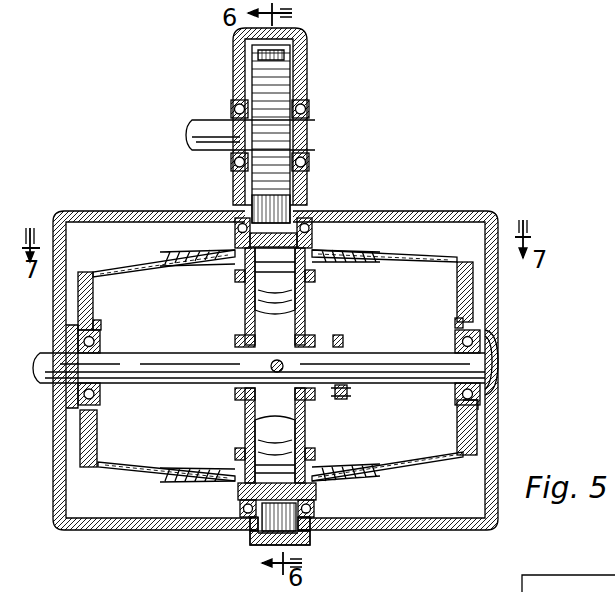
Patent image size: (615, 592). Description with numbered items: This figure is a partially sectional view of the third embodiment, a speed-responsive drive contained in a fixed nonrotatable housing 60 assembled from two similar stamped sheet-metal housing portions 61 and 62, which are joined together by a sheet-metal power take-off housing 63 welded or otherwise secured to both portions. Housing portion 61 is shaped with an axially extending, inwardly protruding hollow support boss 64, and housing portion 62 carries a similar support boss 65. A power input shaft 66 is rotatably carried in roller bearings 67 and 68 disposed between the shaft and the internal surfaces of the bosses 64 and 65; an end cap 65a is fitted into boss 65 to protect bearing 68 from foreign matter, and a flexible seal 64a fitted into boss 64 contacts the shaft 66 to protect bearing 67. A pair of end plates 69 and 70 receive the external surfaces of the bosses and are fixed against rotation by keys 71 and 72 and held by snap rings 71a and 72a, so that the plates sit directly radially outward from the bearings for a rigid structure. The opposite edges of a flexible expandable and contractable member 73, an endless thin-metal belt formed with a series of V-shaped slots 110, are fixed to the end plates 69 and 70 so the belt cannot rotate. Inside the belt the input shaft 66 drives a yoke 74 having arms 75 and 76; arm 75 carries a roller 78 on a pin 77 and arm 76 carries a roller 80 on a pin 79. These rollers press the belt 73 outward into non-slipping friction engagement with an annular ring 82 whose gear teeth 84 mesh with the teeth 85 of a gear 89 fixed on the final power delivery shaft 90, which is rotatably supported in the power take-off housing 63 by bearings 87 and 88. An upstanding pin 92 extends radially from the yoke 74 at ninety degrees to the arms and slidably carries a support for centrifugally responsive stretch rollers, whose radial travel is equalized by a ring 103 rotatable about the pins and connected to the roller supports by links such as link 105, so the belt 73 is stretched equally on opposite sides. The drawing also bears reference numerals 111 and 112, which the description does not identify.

The fixed nonrotatable housing 60 is at (400, 207).
The housing portion 61 is at (118, 211).
The housing portion 62 is at (445, 205).
The power take-off housing 63 is at (307, 40).
The support boss 64 is at (95, 405).
The flexible seal 64a is at (66, 395).
The support boss 65 is at (458, 382).
The end cap 65a is at (493, 344).
The power input shaft 66 is at (170, 352).
The roller bearing 67 is at (100, 340).
The roller bearing 68 is at (455, 335).
The end plate 69 is at (93, 300).
The end plate 70 is at (457, 280).
The key 71 is at (98, 325).
The snap ring 71a is at (97, 412).
The key 72 is at (455, 322).
The snap ring 72a is at (465, 412).
The flexible expandable and contractable member 73 is at (463, 415).
The yoke 74 is at (312, 415).
The arm 75 is at (308, 328).
The arm 76 is at (298, 418).
The pin 77 is at (315, 276).
The roller 78 is at (265, 283).
The pin 79 is at (315, 453).
The roller 80 is at (245, 425).
The annular ring 82 is at (238, 490).
The gear teeth 84 is at (265, 537).
The teeth 85 is at (283, 93).
The bearing 87 is at (231, 162).
The bearing 88 is at (309, 161).
The gear 89 is at (285, 72).
The final power delivery shaft 90 is at (213, 128).
The upstanding pin 92 is at (278, 360).
The ring 103 is at (343, 340).
The link 105 is at (348, 392).
The slots 110 is at (330, 252).
The shaft section 111 is at (199, 371).
The lower disc 112 is at (245, 398).